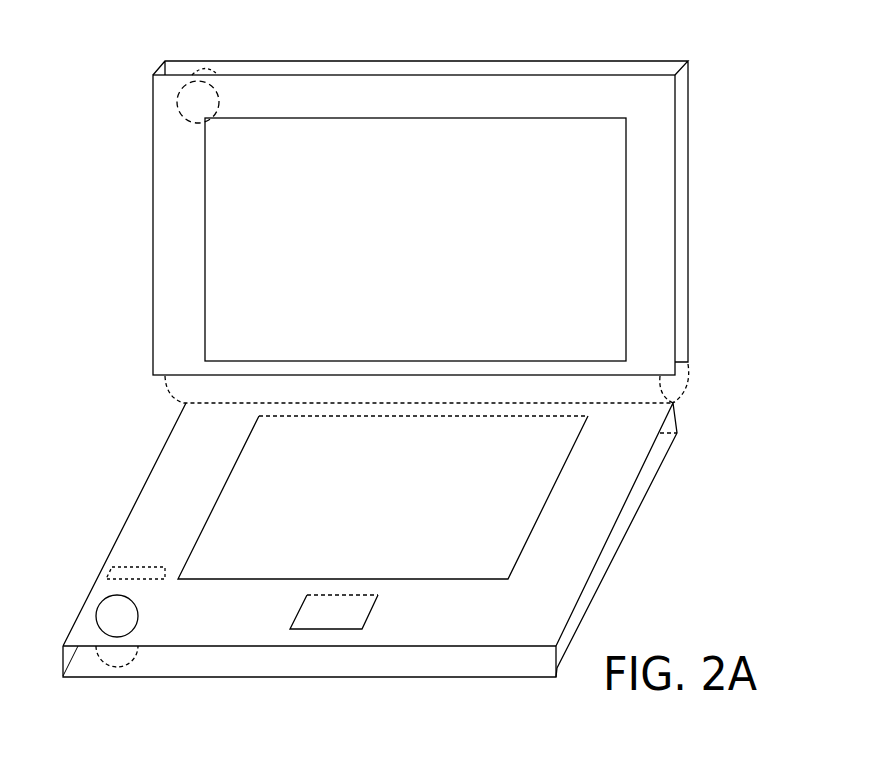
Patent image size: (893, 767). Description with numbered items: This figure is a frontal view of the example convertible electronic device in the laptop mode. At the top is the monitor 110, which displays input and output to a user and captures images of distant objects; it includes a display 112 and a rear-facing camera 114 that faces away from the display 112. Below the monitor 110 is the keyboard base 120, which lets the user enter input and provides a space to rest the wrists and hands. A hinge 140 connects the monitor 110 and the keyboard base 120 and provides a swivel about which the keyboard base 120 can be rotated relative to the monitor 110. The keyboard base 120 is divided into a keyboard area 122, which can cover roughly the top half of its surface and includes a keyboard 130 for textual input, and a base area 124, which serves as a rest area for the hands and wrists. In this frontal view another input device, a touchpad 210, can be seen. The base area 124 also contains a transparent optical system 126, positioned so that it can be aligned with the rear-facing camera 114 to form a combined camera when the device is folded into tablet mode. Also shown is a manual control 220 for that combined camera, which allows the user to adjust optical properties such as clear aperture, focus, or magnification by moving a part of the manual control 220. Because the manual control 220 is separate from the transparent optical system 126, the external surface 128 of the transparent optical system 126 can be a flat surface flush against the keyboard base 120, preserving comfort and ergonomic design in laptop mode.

The monitor 110 is at (688, 156).
The display 112 is at (415, 239).
The rear-facing camera 114 is at (190, 73).
The hinge 140 is at (660, 383).
The keyboard base 120 is at (595, 600).
The keyboard area 122 is at (178, 475).
The base area 124 is at (507, 623).
The transparent optical system 126 is at (113, 668).
The external surface 128 is at (117, 594).
The keyboard 130 is at (383, 497).
The touchpad 210 is at (334, 612).
The manual control 220 is at (138, 567).